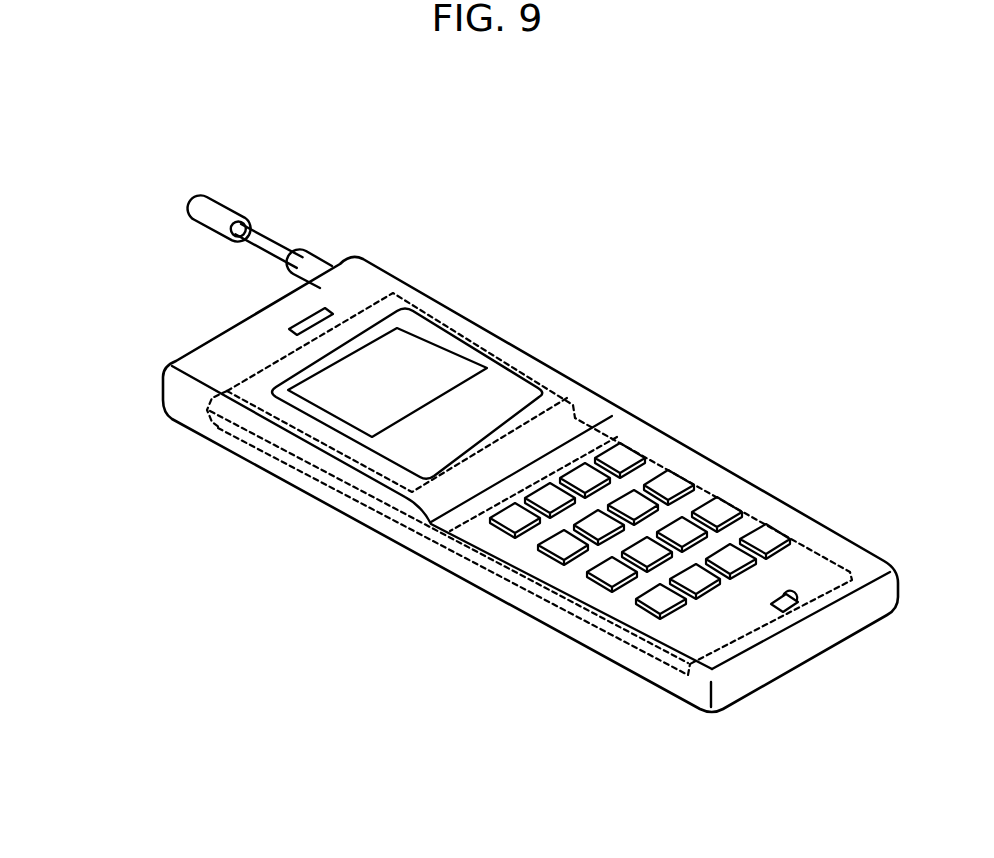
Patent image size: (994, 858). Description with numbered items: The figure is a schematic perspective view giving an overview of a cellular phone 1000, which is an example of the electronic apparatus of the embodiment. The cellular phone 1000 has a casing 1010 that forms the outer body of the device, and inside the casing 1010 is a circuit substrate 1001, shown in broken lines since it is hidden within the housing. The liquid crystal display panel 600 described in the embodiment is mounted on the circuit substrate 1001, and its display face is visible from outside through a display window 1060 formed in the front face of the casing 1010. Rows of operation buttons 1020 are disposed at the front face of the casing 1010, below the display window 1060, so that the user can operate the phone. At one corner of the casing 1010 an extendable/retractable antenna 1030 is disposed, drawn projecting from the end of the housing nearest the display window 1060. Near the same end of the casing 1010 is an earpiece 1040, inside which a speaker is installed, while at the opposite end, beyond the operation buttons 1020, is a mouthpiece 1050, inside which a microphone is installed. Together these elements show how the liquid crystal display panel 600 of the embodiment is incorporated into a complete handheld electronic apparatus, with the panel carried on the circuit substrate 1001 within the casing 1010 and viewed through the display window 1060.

The cellular phone 1000 is at (596, 128).
The circuit substrate 1001 is at (466, 559).
The casing 1010 is at (620, 406).
The liquid crystal display panel 600 is at (486, 348).
The display window 1060 is at (411, 338).
The operation buttons 1020 is at (720, 508).
The antenna 1030 is at (273, 233).
The earpiece 1040 is at (303, 322).
The mouthpiece 1050 is at (789, 603).